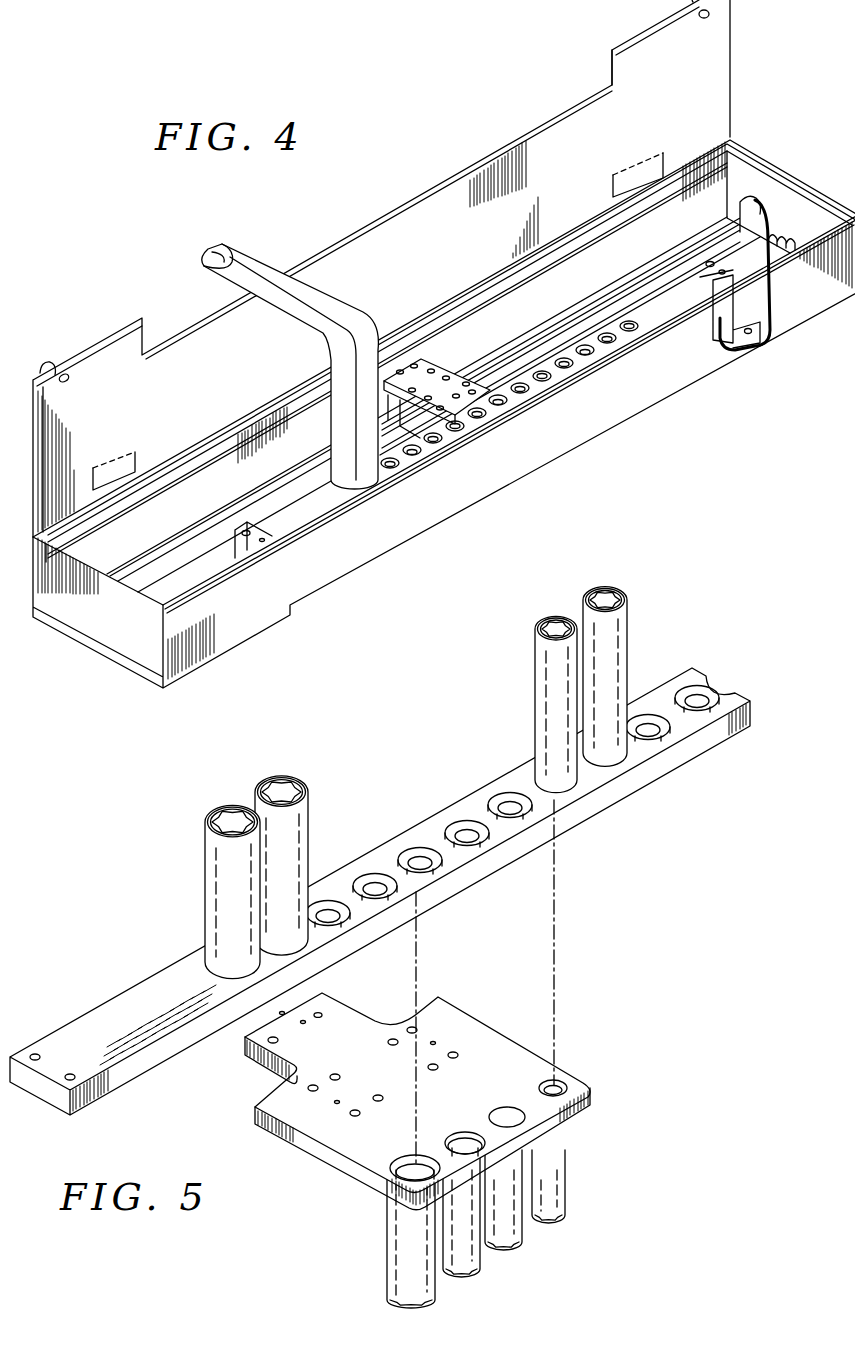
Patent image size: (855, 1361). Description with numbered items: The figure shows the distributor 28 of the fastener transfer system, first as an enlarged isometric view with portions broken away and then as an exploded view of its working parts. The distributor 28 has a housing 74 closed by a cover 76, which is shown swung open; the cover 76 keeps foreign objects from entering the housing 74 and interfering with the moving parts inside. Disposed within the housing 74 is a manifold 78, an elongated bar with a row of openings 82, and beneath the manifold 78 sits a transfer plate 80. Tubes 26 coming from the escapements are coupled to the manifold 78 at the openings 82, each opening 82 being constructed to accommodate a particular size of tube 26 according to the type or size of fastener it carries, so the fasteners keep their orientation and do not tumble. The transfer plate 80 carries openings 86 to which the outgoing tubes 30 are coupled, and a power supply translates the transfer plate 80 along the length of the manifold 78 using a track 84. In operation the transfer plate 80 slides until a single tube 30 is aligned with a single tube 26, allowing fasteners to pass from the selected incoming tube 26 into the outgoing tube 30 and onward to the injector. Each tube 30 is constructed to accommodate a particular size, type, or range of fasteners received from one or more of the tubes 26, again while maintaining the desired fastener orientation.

In FIG. 4, the tubes 26 is at (257, 249).
In FIG. 5, the tubes 26 is at (218, 903).
In FIG. 4, the distributor 28 is at (406, 152).
In FIG. 5, the tubes 30 is at (397, 1253).
In FIG. 4, the housing 74 is at (122, 637).
In FIG. 4, the cover 76 is at (104, 356).
In FIG. 4, the manifold 78 is at (570, 355).
In FIG. 5, the manifold 78 is at (63, 1032).
In FIG. 4, the transfer plate 80 is at (433, 374).
In FIG. 5, the transfer plate 80 is at (467, 1025).
In FIG. 4, the openings 82 is at (573, 368).
In FIG. 4, the track 84 is at (770, 233).
In FIG. 5, the openings 86 is at (403, 1160).